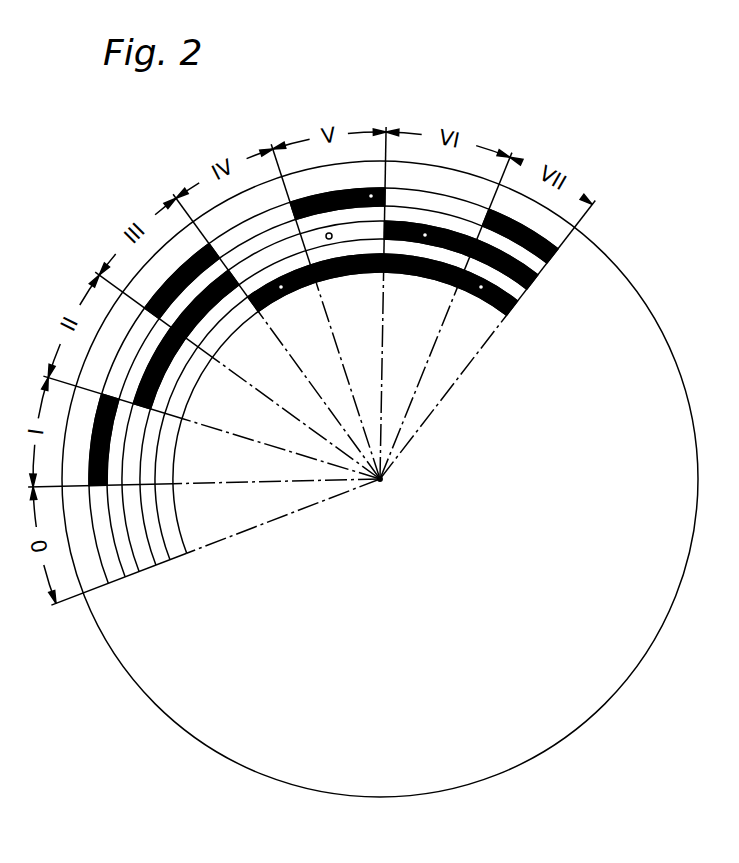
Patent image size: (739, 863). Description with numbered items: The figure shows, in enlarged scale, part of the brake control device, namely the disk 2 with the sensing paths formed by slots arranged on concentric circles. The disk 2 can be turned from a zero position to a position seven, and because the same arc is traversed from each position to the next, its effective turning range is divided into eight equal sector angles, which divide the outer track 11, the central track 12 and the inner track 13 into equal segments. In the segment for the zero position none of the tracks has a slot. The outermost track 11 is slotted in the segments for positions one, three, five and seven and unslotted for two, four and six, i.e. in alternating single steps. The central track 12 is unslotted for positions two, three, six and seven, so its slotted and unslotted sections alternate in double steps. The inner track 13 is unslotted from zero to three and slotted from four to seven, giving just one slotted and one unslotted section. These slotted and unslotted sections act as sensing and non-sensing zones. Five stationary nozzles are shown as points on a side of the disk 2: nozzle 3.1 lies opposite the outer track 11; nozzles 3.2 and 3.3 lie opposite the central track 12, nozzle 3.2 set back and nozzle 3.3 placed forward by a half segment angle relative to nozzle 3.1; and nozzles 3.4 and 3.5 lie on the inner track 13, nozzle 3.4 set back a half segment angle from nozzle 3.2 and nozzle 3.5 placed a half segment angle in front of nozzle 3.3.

The disk 2 is at (652, 334).
The outer sensing path or track 11 is at (104, 562).
The central track 12 is at (154, 560).
The inner track 13 is at (181, 521).
The nozzle 3.1 is at (376, 190).
The nozzle 3.2 is at (333, 240).
The nozzle 3.3 is at (426, 240).
The nozzle 3.4 is at (288, 290).
The nozzle 3.5 is at (479, 292).